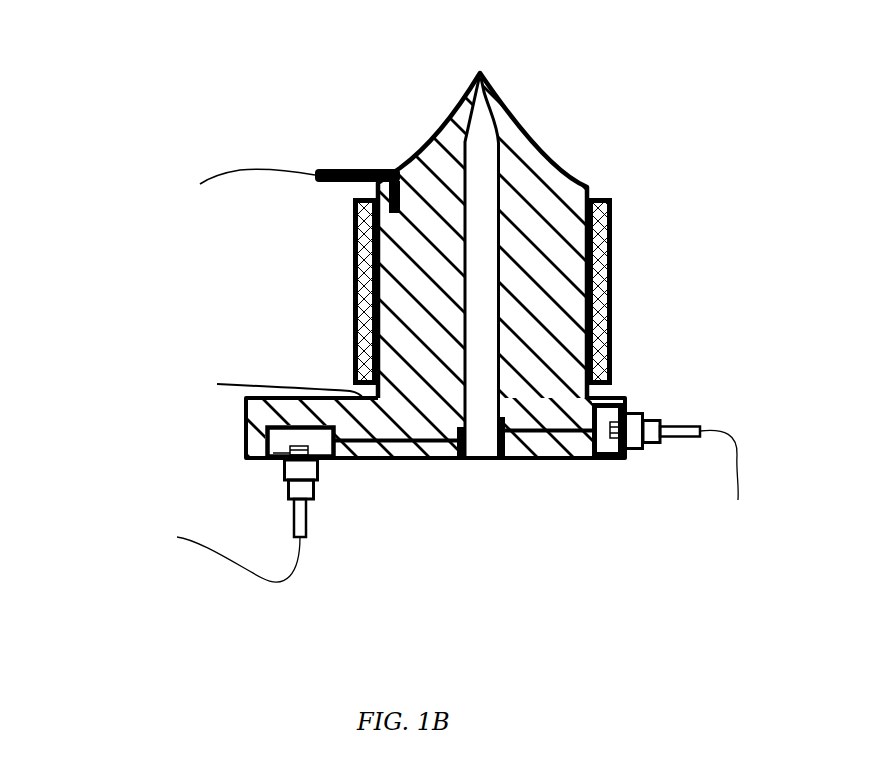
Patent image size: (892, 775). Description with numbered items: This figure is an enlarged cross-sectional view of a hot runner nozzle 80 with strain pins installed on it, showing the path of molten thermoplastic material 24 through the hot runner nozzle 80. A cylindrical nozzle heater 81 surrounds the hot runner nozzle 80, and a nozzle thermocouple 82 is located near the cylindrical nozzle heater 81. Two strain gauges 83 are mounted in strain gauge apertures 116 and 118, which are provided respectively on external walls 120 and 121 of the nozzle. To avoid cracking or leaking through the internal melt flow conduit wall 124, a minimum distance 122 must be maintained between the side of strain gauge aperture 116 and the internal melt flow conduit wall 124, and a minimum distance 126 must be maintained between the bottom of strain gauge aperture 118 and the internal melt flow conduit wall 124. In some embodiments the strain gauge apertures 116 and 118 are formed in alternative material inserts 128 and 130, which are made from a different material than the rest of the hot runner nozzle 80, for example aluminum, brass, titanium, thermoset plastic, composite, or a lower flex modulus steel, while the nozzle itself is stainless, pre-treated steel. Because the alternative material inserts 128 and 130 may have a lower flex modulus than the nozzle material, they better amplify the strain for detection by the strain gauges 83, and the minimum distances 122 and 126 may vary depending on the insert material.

The molten thermoplastic material 24 is at (485, 437).
The hot runner nozzle 80 is at (545, 195).
The cylindrical nozzle heater 81 is at (353, 228).
The nozzle thermocouple 82 is at (325, 168).
The strain gauge 83 is at (667, 422).
The strain gauge aperture 116 is at (250, 455).
The strain gauge aperture 118 is at (625, 450).
The external wall 120 is at (380, 458).
The external wall 121 is at (632, 411).
The minimum distance 122 is at (364, 458).
The internal melt flow conduit wall 124 is at (462, 460).
The minimum distance 126 is at (540, 424).
The alternative material insert 128 is at (319, 443).
The alternative material insert 130 is at (615, 396).